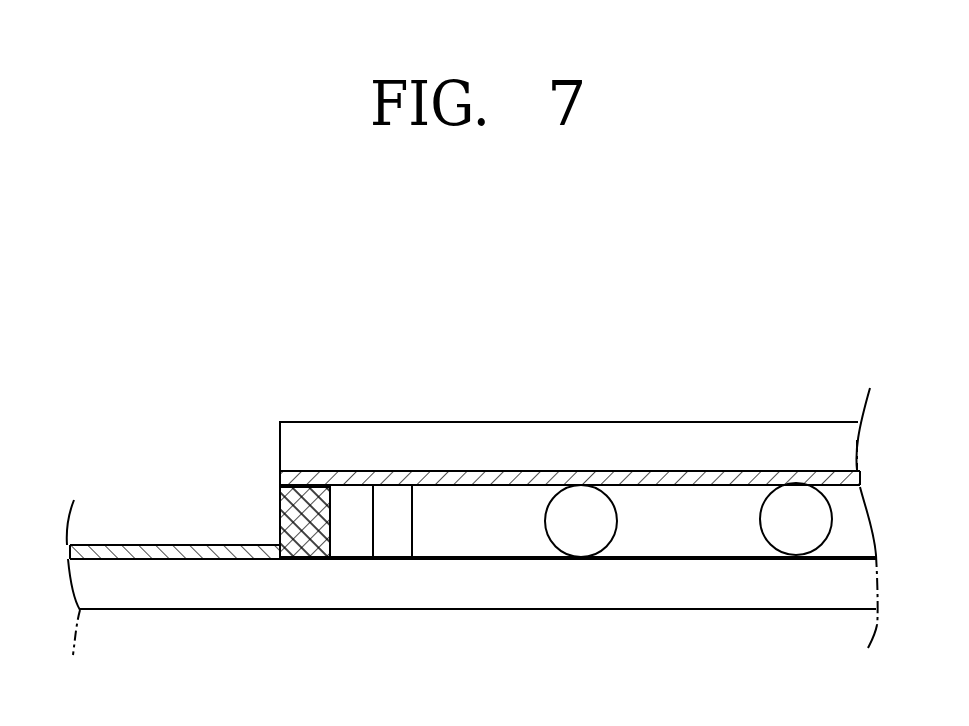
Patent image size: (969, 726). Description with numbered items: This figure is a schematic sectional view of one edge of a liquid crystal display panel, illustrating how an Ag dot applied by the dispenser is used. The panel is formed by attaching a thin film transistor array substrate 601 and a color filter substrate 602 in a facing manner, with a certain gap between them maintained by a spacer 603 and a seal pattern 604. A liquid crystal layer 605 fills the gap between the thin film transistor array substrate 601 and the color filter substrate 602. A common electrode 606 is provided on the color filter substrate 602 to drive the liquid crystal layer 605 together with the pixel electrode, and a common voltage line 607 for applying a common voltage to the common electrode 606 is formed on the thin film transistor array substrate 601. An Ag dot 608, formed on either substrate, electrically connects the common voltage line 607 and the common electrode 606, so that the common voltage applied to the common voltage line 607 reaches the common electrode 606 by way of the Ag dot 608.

The thin film transistor array substrate 601 is at (710, 583).
The color filter substrate 602 is at (338, 448).
The spacer 603 is at (793, 533).
The seal pattern 604 is at (393, 535).
The liquid crystal layer 605 is at (670, 523).
The common electrode 606 is at (280, 477).
The common voltage line 607 is at (127, 557).
The Ag dot 608 is at (292, 515).